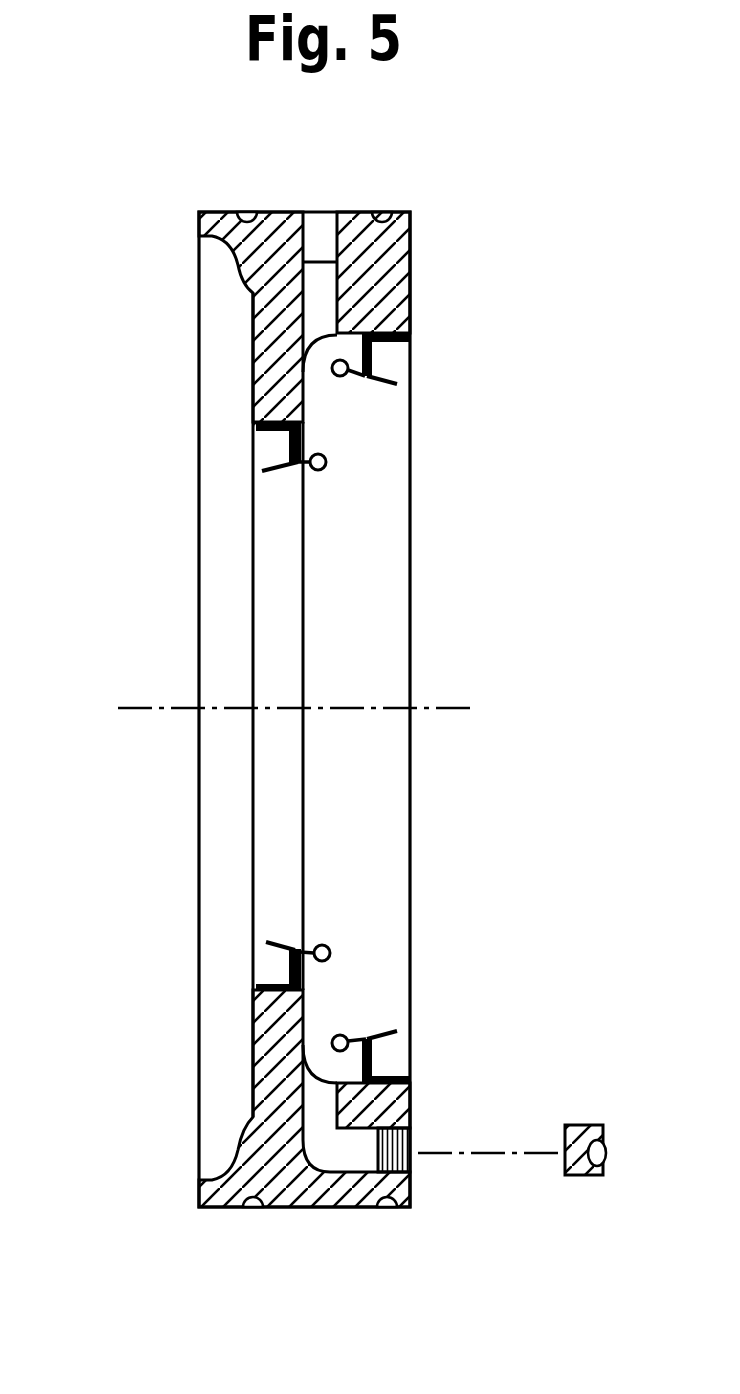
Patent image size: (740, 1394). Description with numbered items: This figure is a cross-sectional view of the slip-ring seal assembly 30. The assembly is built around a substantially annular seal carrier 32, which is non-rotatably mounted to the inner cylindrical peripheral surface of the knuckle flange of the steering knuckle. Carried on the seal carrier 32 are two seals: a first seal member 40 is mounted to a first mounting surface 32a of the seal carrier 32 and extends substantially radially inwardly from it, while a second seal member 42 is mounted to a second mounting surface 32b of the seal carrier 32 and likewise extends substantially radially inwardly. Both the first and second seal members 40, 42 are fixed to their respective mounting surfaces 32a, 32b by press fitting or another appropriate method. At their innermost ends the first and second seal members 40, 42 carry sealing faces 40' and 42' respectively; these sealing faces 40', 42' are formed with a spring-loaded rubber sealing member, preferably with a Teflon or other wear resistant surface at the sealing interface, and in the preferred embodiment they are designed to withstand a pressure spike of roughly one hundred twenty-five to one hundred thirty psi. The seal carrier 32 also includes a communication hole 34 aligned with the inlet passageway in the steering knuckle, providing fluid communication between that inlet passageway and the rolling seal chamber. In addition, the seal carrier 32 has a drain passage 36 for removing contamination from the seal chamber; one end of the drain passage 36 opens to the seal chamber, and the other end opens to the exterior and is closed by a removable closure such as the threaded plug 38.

The slip-ring seal assembly 30 is at (152, 273).
The seal carrier 32 is at (390, 272).
The first mounting surface 32a is at (253, 425).
The second mounting surface 32b is at (408, 340).
The communication hole 34 is at (308, 299).
The drain passage 36 is at (327, 1153).
The threaded plug 38 is at (585, 1124).
The first seal member 40 is at (217, 484).
The sealing face 40' is at (312, 517).
The second seal member 42 is at (417, 379).
The sealing face 42' is at (373, 423).